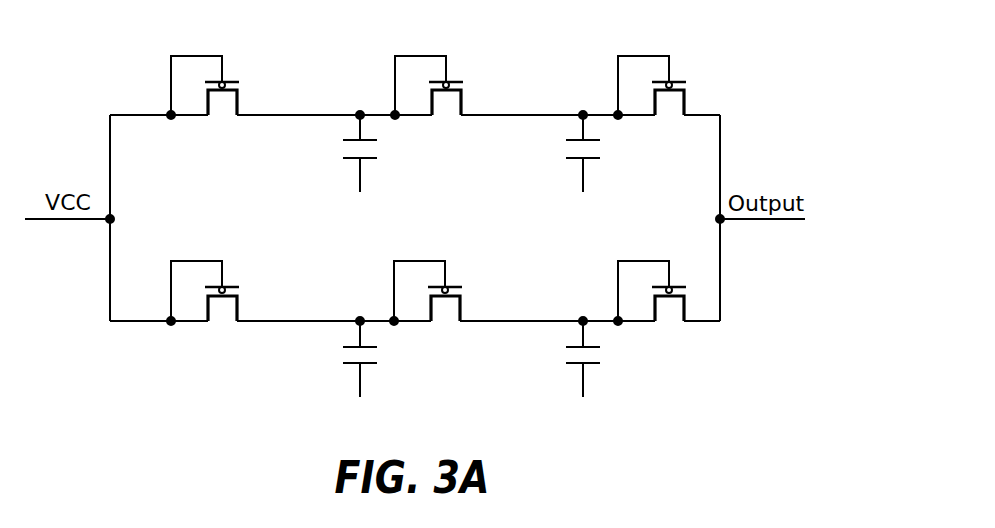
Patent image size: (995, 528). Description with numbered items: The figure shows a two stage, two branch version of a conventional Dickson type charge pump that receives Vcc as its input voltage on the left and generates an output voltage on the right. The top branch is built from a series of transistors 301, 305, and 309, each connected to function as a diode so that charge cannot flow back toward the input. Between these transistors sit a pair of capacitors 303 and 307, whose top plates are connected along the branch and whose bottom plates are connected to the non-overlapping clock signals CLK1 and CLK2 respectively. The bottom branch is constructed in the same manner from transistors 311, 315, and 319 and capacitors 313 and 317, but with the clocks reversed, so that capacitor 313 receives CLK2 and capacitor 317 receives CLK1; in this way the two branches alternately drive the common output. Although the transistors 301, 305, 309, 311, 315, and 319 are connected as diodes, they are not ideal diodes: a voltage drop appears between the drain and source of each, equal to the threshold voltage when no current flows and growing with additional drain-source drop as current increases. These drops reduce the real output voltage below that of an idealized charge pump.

The transistor 301 is at (238, 102).
The capacitor 303 is at (353, 162).
The transistor 305 is at (462, 102).
The capacitor 307 is at (577, 162).
The transistor 309 is at (686, 102).
The transistor 311 is at (241, 308).
The capacitor 313 is at (353, 365).
The transistor 315 is at (465, 308).
The capacitor 317 is at (577, 365).
The transistor 319 is at (687, 308).